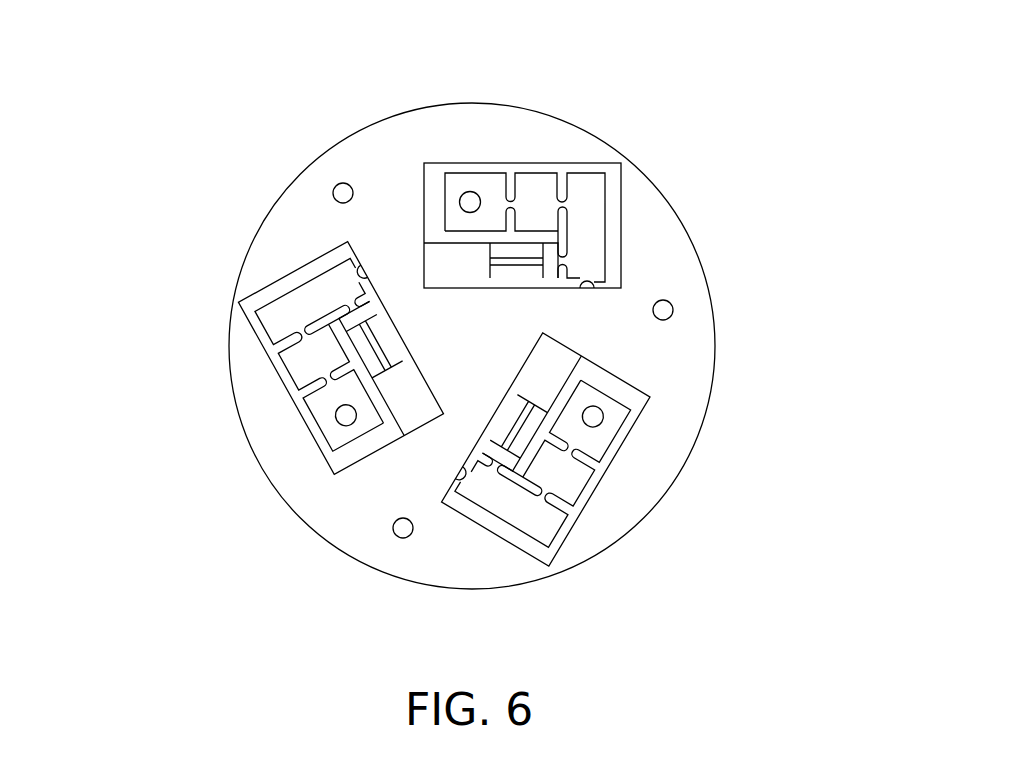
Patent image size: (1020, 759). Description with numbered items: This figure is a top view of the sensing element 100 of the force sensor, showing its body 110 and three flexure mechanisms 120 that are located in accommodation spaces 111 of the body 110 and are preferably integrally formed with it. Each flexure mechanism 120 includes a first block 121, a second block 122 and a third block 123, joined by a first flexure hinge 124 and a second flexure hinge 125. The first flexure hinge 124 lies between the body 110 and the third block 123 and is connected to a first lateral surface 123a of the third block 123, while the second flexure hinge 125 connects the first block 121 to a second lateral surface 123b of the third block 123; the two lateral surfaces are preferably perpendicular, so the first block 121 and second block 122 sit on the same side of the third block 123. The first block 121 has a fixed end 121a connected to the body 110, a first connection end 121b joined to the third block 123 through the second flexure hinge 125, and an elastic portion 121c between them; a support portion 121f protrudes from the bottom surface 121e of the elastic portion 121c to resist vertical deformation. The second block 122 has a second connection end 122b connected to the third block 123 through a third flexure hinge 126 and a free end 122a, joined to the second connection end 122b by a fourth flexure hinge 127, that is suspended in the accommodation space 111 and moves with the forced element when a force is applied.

The sensing element 100 is at (155, 110).
The body 110 is at (345, 160).
The accommodation space 111 is at (435, 193).
The flexure mechanism 120 is at (488, 145).
The first block 121 is at (205, 550).
The fixed end 121a is at (412, 405).
The first connection end 121b is at (360, 347).
The elastic portion 121c is at (390, 383).
The bottom surface 121e is at (513, 417).
The support portion 121f is at (327, 382).
The second block 122 is at (800, 430).
The free end 122a is at (613, 420).
The second connection end 122b is at (577, 477).
The third block 123 is at (596, 188).
The first lateral surface 123a is at (503, 495).
The second lateral surface 123b is at (567, 231).
The first flexure hinge 124 is at (356, 263).
The second flexure hinge 125 is at (563, 257).
The third flexure hinge 126 is at (562, 202).
The fourth flexure hinge 127 is at (509, 202).